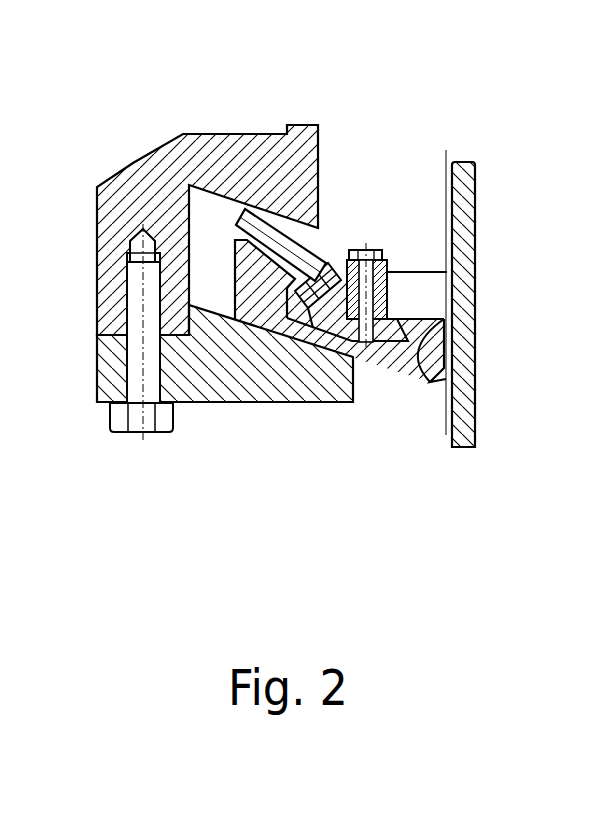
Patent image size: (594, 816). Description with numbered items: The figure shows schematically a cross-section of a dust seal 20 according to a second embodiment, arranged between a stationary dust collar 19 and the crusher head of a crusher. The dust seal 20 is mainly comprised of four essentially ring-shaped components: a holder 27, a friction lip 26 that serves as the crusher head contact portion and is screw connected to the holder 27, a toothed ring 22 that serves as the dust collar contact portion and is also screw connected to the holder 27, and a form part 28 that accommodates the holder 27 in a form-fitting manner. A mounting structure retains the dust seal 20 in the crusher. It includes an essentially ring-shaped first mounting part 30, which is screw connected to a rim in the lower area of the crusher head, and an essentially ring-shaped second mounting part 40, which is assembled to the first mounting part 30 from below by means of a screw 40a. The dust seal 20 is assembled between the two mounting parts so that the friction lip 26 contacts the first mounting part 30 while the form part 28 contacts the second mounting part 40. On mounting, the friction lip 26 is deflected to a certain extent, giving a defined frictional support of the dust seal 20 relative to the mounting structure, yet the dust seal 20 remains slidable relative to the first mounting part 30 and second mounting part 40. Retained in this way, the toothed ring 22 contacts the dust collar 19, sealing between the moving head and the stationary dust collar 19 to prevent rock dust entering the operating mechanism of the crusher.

The dust collar 19 is at (480, 287).
The dust seal 20 is at (391, 252).
The toothed ring 22 is at (442, 316).
The friction lip 26 is at (314, 240).
The holder 27 is at (334, 322).
The form part 28 is at (263, 312).
The first mounting part 30 is at (217, 150).
The second mounting part 40 is at (203, 375).
The screw 40a is at (155, 422).